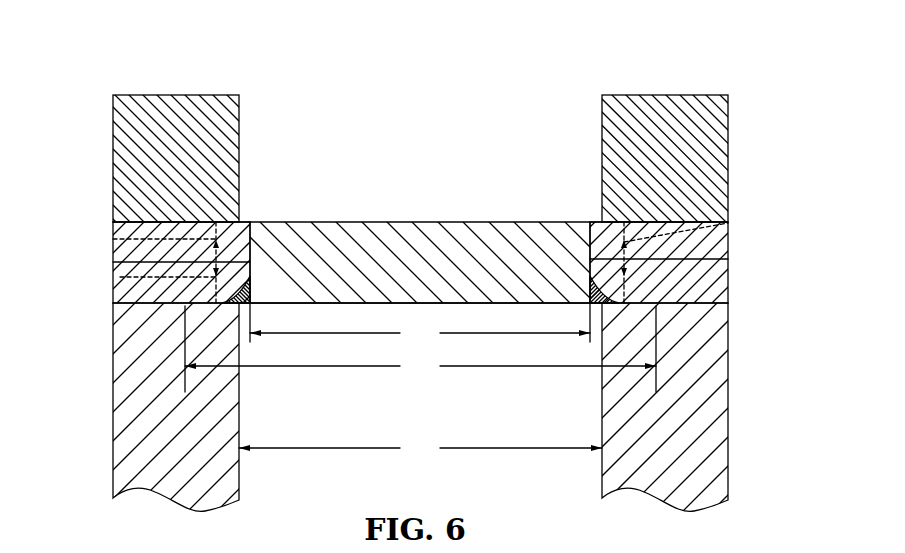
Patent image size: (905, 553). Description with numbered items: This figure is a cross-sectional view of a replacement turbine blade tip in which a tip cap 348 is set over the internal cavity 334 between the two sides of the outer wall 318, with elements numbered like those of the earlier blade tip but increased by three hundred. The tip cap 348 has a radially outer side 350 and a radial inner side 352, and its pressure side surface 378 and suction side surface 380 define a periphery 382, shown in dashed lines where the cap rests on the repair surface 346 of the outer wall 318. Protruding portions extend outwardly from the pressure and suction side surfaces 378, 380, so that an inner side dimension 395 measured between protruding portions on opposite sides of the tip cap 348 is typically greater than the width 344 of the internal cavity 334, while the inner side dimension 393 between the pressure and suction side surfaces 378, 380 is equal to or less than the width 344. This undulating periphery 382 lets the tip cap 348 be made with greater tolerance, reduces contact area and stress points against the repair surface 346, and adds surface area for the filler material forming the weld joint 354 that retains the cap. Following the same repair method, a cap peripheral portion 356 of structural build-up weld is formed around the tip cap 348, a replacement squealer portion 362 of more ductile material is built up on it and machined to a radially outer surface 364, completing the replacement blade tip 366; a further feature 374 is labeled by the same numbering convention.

The outer wall 318 is at (113, 330).
The internal cavity 334 is at (302, 409).
The width 344 is at (420, 448).
The repair surface 346 is at (728, 300).
The tip cap 348 is at (393, 195).
The radially outer side 350 is at (477, 222).
The radial inner side 352 is at (505, 303).
The weld joint 354 is at (225, 283).
The cap peripheral portion 356 is at (578, 222).
The replacement squealer portion 362 is at (699, 138).
The radially outer surface 364 is at (650, 94).
The replacement blade tip 366 is at (185, 88).
The top surface 374 is at (324, 222).
The pressure side surface 378 is at (190, 262).
The suction side surface 380 is at (728, 259).
The periphery 382 is at (113, 239).
The inner side dimension 393 is at (420, 323).
The inner side dimension 395 is at (420, 349).